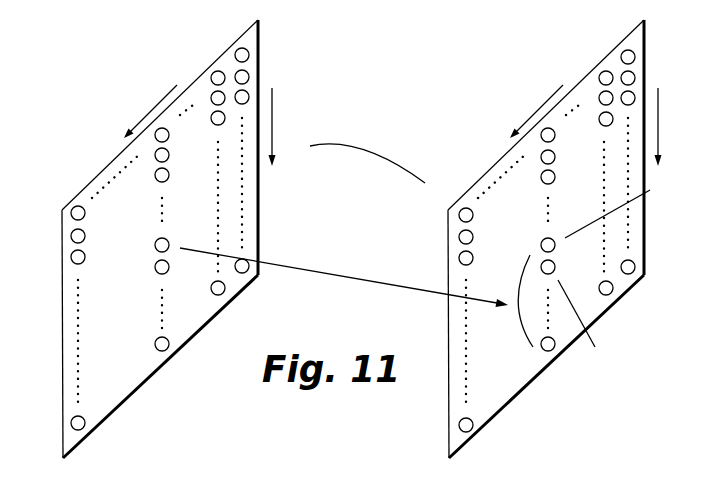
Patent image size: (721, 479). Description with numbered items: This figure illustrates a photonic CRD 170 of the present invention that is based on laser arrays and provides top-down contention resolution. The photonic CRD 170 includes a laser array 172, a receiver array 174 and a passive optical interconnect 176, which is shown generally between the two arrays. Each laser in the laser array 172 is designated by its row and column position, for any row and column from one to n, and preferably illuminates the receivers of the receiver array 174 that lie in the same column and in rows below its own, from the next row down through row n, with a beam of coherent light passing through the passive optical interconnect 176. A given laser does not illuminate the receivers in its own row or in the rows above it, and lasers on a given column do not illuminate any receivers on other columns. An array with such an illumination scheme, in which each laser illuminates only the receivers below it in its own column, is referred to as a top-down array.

The photonic CRD 170 is at (497, 63).
The laser array 172 is at (62, 270).
The receiver array 174 is at (563, 352).
The passive optical interconnect 176 is at (402, 162).